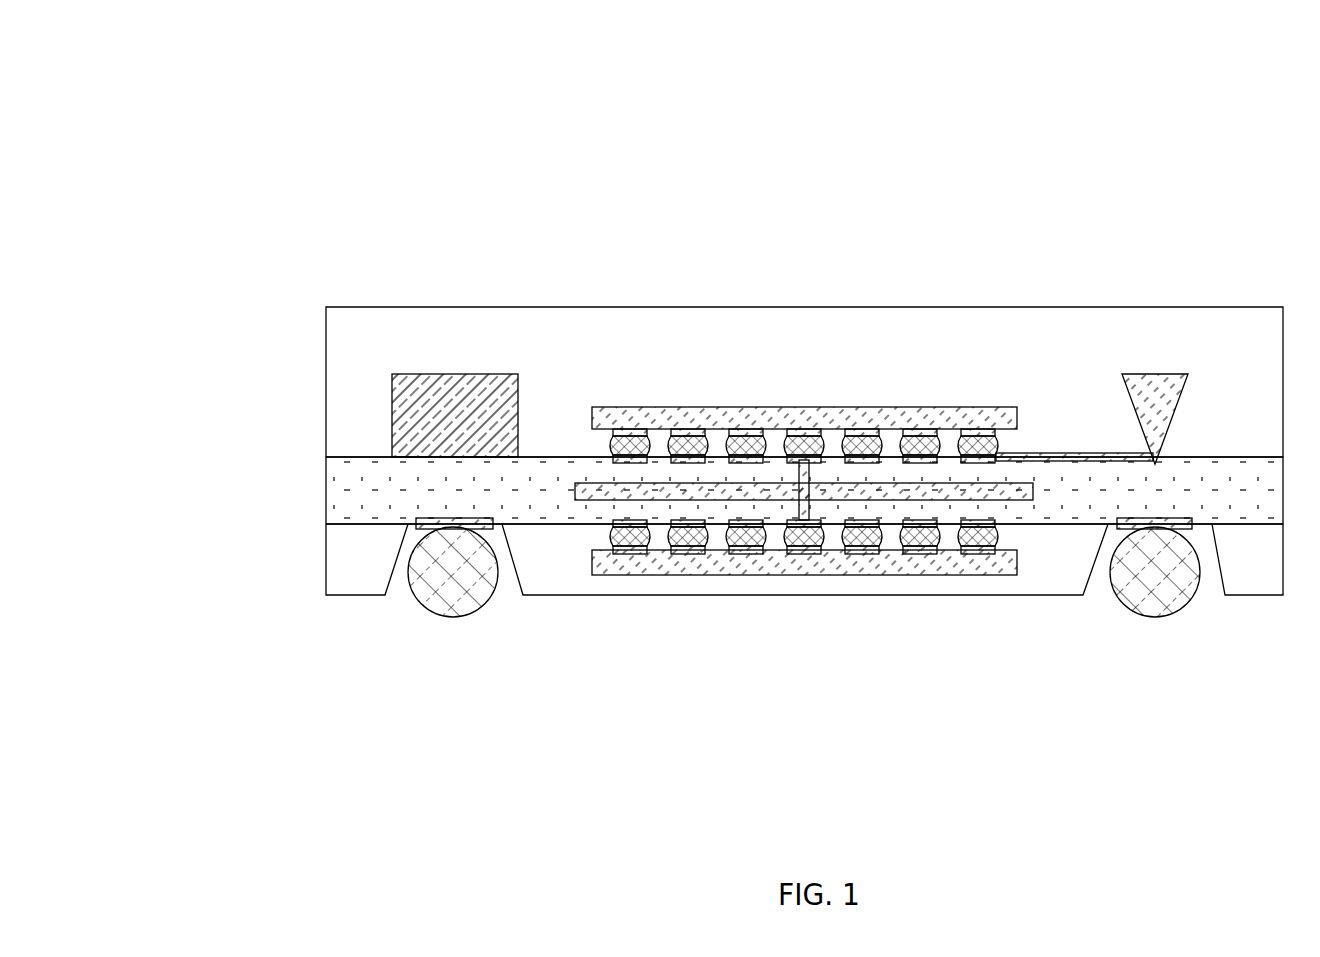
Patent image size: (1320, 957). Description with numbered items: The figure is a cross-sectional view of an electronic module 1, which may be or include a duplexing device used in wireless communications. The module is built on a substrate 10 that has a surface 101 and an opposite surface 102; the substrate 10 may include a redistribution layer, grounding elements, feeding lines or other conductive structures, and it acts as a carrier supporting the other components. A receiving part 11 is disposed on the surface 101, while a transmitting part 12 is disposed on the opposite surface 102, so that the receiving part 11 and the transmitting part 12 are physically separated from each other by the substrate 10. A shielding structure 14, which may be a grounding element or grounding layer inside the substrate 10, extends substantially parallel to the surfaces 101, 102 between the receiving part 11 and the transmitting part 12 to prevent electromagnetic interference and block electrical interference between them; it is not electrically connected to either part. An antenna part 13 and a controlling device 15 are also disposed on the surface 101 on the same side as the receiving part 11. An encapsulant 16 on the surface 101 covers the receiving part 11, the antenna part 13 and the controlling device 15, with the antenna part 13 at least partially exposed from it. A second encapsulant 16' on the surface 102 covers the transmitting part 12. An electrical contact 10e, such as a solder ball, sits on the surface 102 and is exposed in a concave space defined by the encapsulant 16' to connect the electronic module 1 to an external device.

The electronic module 1 is at (168, 43).
The substrate 10 is at (335, 492).
The surface 101 is at (357, 457).
The surface 102 is at (360, 524).
The electrical contact 10e is at (1155, 575).
The receiving part 11 is at (798, 414).
The transmitting part 12 is at (773, 560).
The antenna part 13 is at (1160, 392).
The shielding structure 14 is at (583, 488).
The controlling device 15 is at (453, 390).
The encapsulant 16 is at (749, 382).
The encapsulant 16' is at (748, 559).